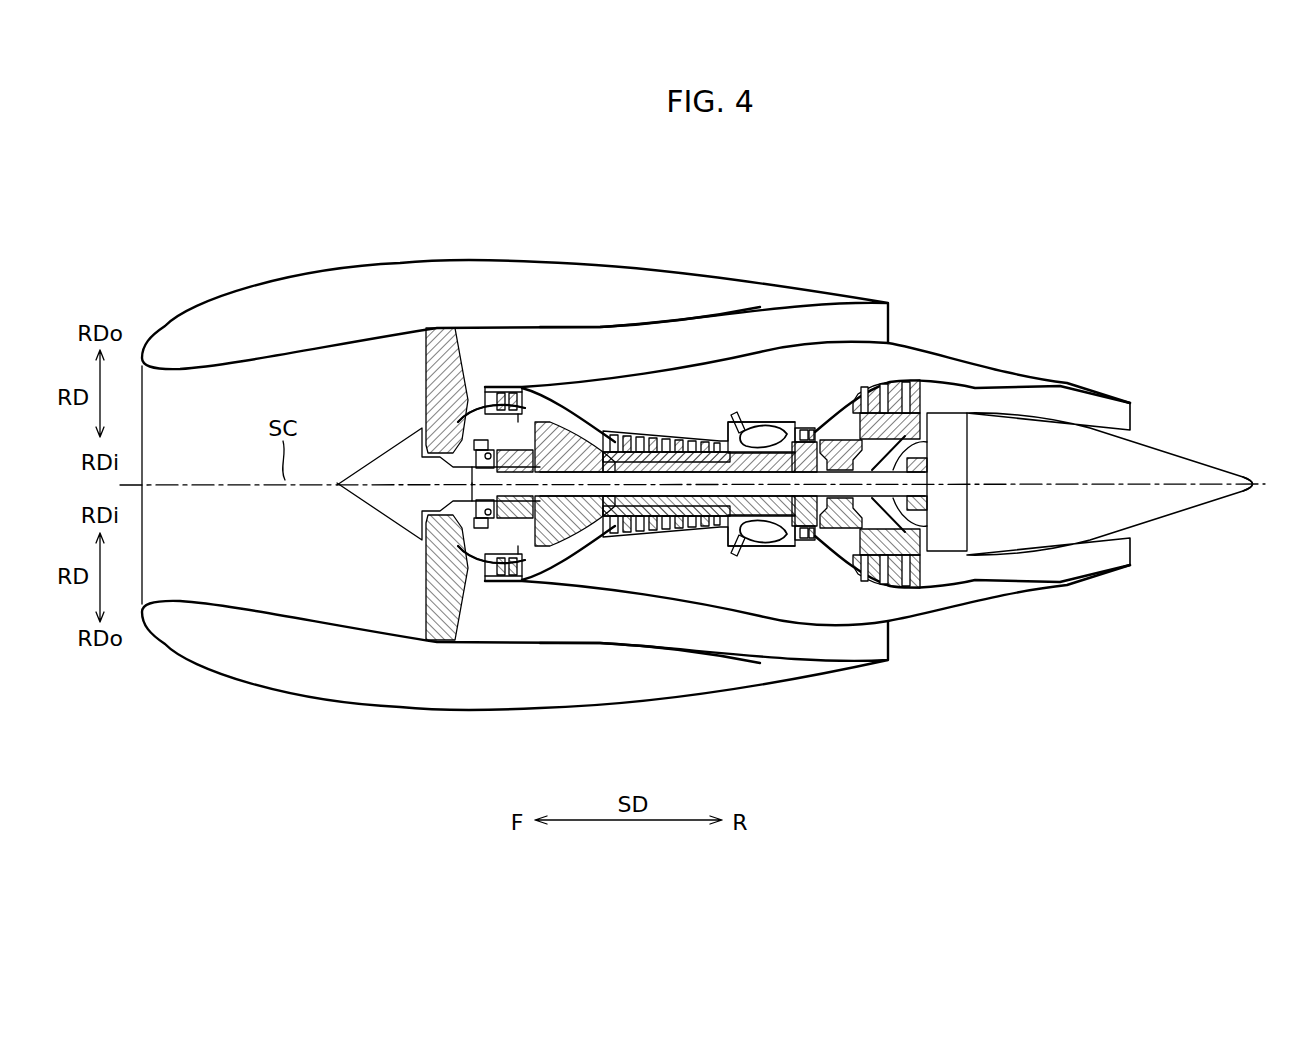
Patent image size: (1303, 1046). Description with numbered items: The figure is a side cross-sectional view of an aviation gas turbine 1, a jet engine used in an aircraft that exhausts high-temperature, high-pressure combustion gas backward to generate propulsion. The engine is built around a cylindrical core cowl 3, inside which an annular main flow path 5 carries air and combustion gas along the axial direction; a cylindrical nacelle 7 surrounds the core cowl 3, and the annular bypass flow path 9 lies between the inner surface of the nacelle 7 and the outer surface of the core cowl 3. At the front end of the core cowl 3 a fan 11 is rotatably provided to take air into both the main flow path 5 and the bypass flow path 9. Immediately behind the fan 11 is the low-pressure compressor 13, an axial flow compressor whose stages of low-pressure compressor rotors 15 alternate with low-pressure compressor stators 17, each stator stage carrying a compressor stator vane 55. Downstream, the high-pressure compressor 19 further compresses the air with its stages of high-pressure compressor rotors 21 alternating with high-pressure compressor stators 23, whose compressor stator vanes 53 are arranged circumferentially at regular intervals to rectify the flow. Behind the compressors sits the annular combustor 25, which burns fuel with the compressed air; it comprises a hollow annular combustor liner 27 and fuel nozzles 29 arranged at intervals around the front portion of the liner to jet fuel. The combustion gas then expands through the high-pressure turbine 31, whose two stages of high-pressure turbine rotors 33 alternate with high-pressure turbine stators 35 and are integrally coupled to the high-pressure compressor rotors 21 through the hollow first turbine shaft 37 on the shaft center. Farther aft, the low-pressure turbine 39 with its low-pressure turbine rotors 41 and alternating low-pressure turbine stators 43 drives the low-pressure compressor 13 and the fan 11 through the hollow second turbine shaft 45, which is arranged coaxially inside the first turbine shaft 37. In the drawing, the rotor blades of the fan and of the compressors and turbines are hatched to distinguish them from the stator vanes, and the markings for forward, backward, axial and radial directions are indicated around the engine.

The aviation gas turbine 1 is at (800, 242).
The core cowl 3 is at (703, 366).
The main flow path 5 is at (562, 425).
The nacelle 7 is at (574, 263).
The bypass flow path 9 is at (601, 344).
The fan 11 is at (448, 326).
The low-pressure compressor 13 is at (527, 405).
The low-pressure compressor rotors 15 is at (482, 390).
The low-pressure compressor stators 17 is at (553, 385).
The high-pressure compressor 19 is at (655, 427).
The high-pressure compressor rotors 21 is at (678, 432).
The high-pressure compressor stators 23 is at (607, 428).
The combustor 25 is at (777, 420).
The combustor liner 27 is at (752, 540).
The fuel nozzles 29 is at (738, 416).
The high-pressure turbine 31 is at (803, 426).
The high-pressure turbine rotors 33 is at (815, 428).
The high-pressure turbine stators 35 is at (795, 425).
The first turbine shaft 37 is at (704, 533).
The low-pressure turbine 39 is at (890, 370).
The low-pressure turbine rotors 41 is at (913, 380).
The low-pressure turbine stators 43 is at (853, 410).
The second turbine shaft 45 is at (962, 446).
The compressor stator vanes 53 is at (634, 431).
The compressor stator vane 55 is at (522, 400).